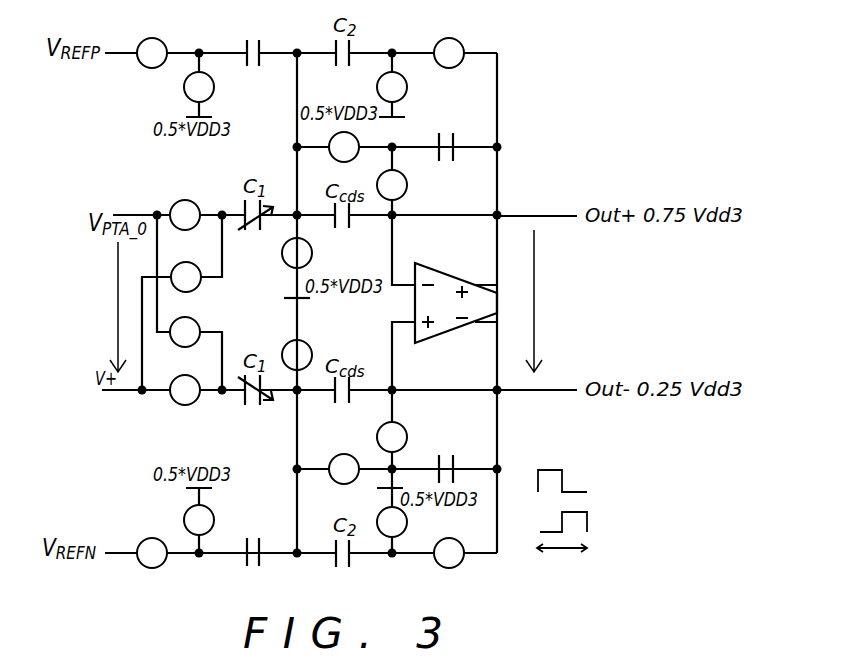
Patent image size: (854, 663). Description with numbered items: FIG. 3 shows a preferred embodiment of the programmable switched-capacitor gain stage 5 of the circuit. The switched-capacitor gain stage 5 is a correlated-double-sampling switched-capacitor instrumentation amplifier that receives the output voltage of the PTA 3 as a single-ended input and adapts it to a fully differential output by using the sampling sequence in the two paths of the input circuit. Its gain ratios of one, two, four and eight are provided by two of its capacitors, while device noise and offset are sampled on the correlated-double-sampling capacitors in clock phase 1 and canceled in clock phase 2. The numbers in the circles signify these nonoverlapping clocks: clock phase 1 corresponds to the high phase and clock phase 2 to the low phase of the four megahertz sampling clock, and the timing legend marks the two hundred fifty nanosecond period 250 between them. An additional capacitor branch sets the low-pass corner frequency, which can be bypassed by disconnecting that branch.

The clock phase 1 is at (362, 304).
The clock phase 2 is at (358, 303).
The PTA 3 is at (449, 295).
The switched-capacitor gain stage 5 is at (256, 289).
The 250 ns clock period 250 is at (562, 559).